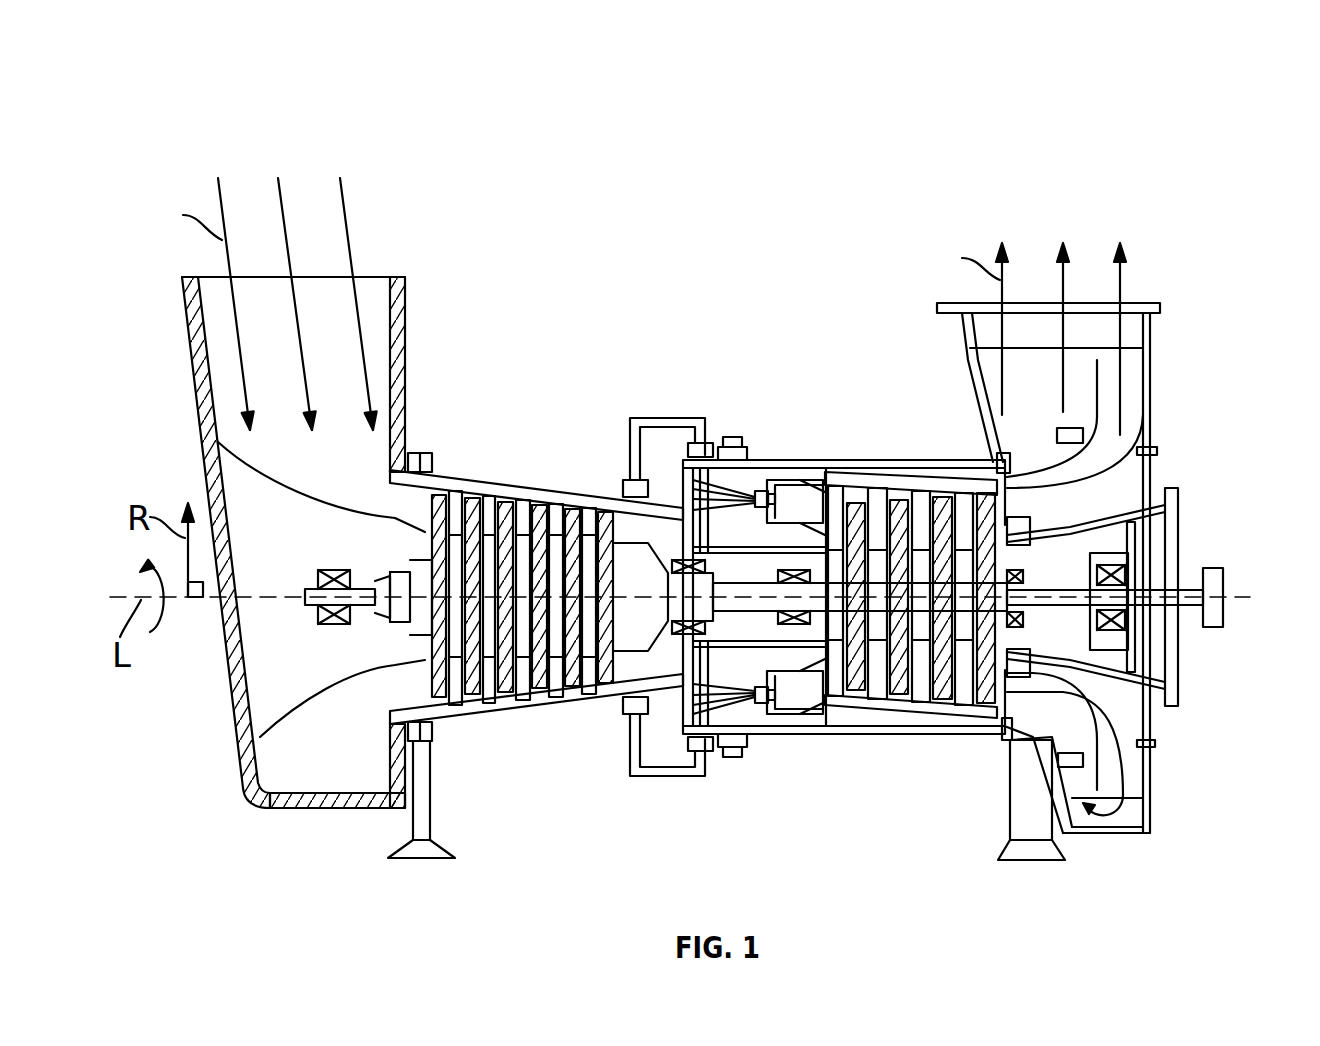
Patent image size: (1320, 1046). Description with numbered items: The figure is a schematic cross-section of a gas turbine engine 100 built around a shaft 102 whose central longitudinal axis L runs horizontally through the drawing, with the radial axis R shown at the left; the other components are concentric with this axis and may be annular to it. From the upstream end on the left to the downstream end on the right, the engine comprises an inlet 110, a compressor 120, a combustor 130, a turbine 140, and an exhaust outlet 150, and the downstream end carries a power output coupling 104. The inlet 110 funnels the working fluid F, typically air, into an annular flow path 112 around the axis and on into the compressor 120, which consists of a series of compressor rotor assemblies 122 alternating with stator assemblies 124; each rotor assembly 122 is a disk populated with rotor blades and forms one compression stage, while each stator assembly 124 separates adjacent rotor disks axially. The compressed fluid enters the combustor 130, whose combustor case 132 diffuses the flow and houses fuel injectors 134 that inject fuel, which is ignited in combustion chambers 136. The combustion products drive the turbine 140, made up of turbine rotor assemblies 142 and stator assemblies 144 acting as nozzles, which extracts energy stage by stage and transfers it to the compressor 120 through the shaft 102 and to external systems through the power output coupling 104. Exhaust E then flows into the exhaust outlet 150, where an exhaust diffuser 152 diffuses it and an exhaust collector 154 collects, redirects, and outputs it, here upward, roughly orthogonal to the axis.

The gas turbine engine 100 is at (160, 78).
The shaft 102 is at (308, 592).
The power output coupling 104 is at (1222, 565).
The inlet 110 is at (405, 138).
The annular flow path 112 is at (376, 491).
The compressor 120 is at (672, 138).
The compressor rotor assembly 122 is at (477, 695).
The stator assembly 124 is at (490, 503).
The combustor 130 is at (820, 138).
The combustor case 132 is at (758, 470).
The fuel injector 134 is at (750, 481).
The combustion chamber 136 is at (787, 480).
The turbine 140 is at (1000, 138).
The turbine rotor assembly 142 is at (986, 705).
The stator assembly 144 is at (963, 483).
The exhaust outlet 150 is at (1190, 172).
The exhaust diffuser 152 is at (1050, 456).
The exhaust collector 154 is at (968, 365).